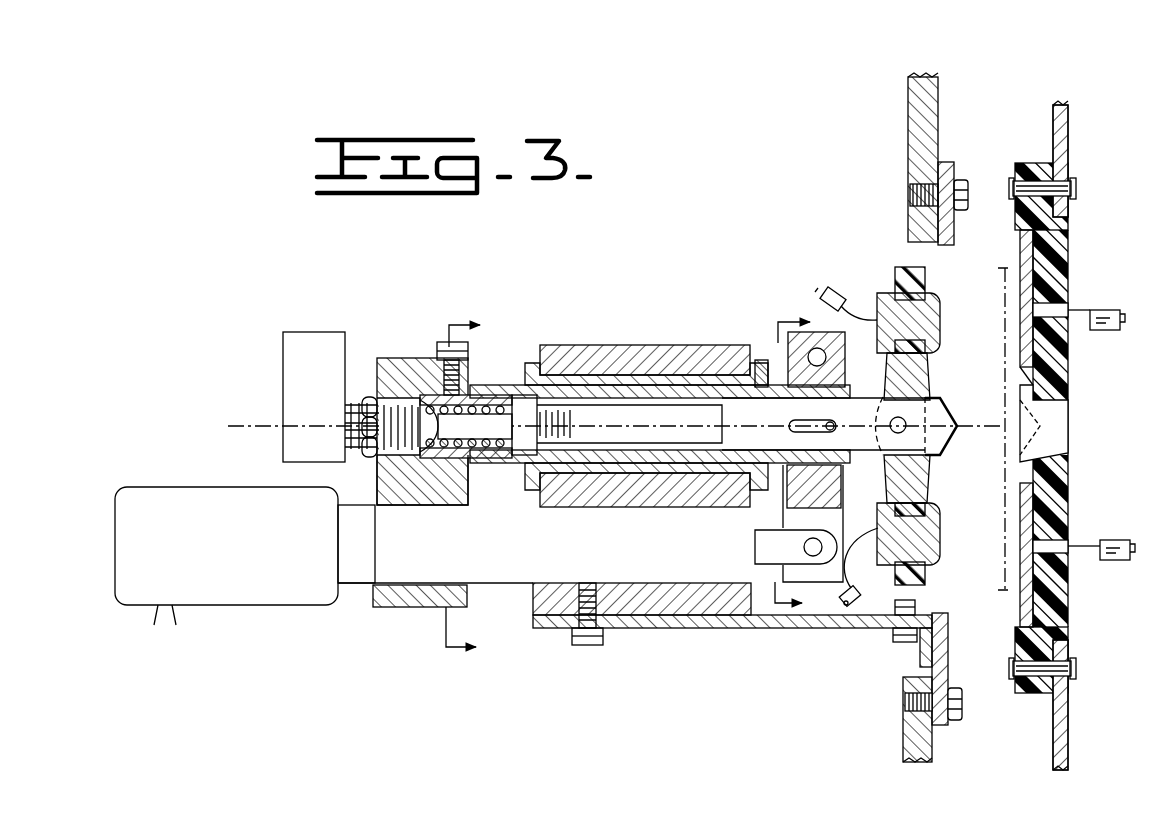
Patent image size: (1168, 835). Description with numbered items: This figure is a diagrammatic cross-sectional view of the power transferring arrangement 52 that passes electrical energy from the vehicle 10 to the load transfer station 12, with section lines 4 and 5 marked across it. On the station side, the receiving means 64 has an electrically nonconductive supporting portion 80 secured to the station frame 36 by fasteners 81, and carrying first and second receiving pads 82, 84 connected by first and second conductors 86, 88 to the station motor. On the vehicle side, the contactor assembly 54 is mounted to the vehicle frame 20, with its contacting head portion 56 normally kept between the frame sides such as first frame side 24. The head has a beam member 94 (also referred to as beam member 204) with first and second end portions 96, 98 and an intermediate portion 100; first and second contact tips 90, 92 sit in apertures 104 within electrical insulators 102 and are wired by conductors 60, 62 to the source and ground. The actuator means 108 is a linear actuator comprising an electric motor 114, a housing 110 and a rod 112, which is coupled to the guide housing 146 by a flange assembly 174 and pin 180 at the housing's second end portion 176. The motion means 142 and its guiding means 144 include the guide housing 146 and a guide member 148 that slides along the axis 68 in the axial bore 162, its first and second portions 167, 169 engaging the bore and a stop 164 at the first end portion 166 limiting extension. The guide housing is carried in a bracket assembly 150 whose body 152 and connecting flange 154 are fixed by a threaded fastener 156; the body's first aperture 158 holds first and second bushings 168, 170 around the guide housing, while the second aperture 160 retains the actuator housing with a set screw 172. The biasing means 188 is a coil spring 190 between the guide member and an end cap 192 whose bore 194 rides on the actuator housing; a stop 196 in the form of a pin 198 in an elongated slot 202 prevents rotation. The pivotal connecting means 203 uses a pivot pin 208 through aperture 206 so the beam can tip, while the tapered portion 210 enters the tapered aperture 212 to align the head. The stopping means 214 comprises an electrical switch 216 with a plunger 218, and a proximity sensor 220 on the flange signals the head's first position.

The vehicle 10 is at (956, 80).
The load transfer station 12 is at (1042, 742).
The vehicle frame 20 is at (914, 159).
The first frame side 24 is at (935, 748).
The station frame 36 is at (1064, 148).
The power transferring arrangement 52 is at (870, 640).
The contactor assembly 54 is at (692, 685).
The contacting head portion 56 is at (917, 409).
The conductor 60 is at (860, 596).
The conductor 62 is at (838, 300).
The receiving means 64 is at (1000, 160).
The axis 68 is at (247, 425).
The supporting portion 80 is at (1064, 432).
The fasteners 81 is at (1076, 190).
The first receiving pad 82 is at (1028, 510).
The second receiving pad 84 is at (1068, 272).
The first conductor 86 is at (1120, 560).
The second conductor 88 is at (1110, 330).
The first contact tip 90 is at (942, 530).
The second contact tip 92 is at (942, 310).
The beam member 94 is at (940, 502).
The first end portion 96 is at (930, 585).
The second end portion 98 is at (925, 272).
The intermediate portion 100 is at (948, 406).
The electrical insulator 102 is at (900, 283).
The aperture 104 is at (942, 323).
The actuator means 108 is at (245, 570).
The housing 110 is at (432, 558).
The rod 112 is at (763, 574).
The electric motor 114 is at (185, 551).
The motion means 142 is at (623, 382).
The guiding means 144 is at (640, 345).
The guide housing 146 is at (720, 456).
The guide member 148 is at (625, 445).
The bracket assembly 150 is at (640, 680).
The body 152 is at (535, 620).
The connecting flange 154 is at (920, 655).
The threaded fastener 156 is at (962, 706).
The first aperture 158 is at (680, 388).
The second aperture 160 is at (540, 590).
The axial bore 162 is at (668, 445).
The stop 164 is at (502, 460).
The first end portion 166 is at (462, 460).
The first end portion 167 is at (520, 400).
The first bushing 168 is at (527, 382).
The second end portion 169 is at (732, 380).
The second bushing 170 is at (768, 365).
The set screw 172 is at (445, 350).
The flange assembly 174 is at (812, 556).
The second end portion 176 is at (845, 373).
The pin 180 is at (782, 606).
The biasing means 188 is at (399, 419).
The coil spring 190 is at (432, 458).
The end cap 192 is at (378, 470).
The bore 194 is at (455, 590).
The stop 196 is at (836, 452).
The pin 198 is at (812, 428).
The elongated slot 202 is at (795, 418).
The pivotal connecting means 203 is at (1005, 416).
The beam member 204 is at (935, 360).
The aperture 206 is at (940, 476).
The pivot pin 208 is at (935, 396).
The tapered portion 210 is at (948, 440).
The tapered aperture 212 is at (1060, 456).
The stopping means 214 is at (276, 396).
The electrical switch 216 is at (294, 391).
The plunger 218 is at (405, 462).
The proximity sensor 220 is at (915, 606).
The section line 4- 4 is at (458, 488).
The section line 5- 5 is at (801, 455).